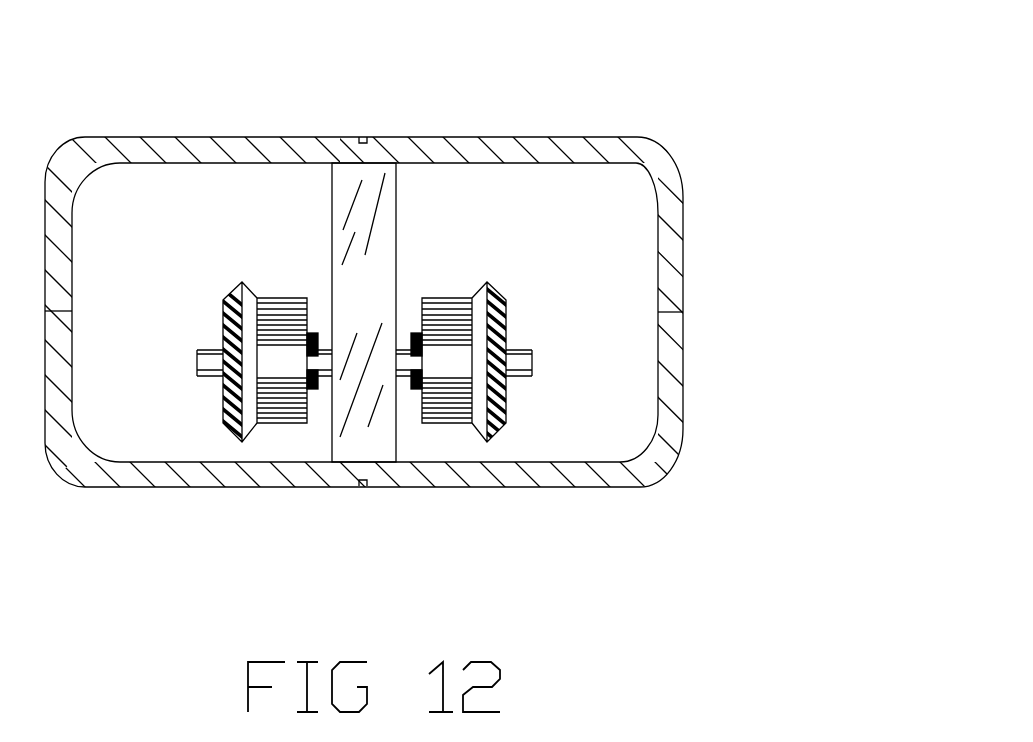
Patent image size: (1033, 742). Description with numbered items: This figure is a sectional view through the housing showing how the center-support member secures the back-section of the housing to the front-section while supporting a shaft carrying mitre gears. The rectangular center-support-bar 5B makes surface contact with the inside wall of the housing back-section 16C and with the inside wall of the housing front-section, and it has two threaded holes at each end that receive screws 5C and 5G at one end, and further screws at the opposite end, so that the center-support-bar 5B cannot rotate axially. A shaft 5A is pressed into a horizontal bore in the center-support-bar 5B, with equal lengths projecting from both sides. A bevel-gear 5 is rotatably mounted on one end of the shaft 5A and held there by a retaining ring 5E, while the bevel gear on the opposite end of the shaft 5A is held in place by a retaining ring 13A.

The bevel-gear 5 is at (730, 167).
The shaft 5A is at (738, 423).
The center-support-bar 5B is at (357, 277).
The screw 5C is at (380, 137).
The screw 5G is at (603, 260).
The retaining ring 5E is at (565, 542).
The retaining ring 13A is at (182, 555).
The housing back-section 16C is at (673, 208).